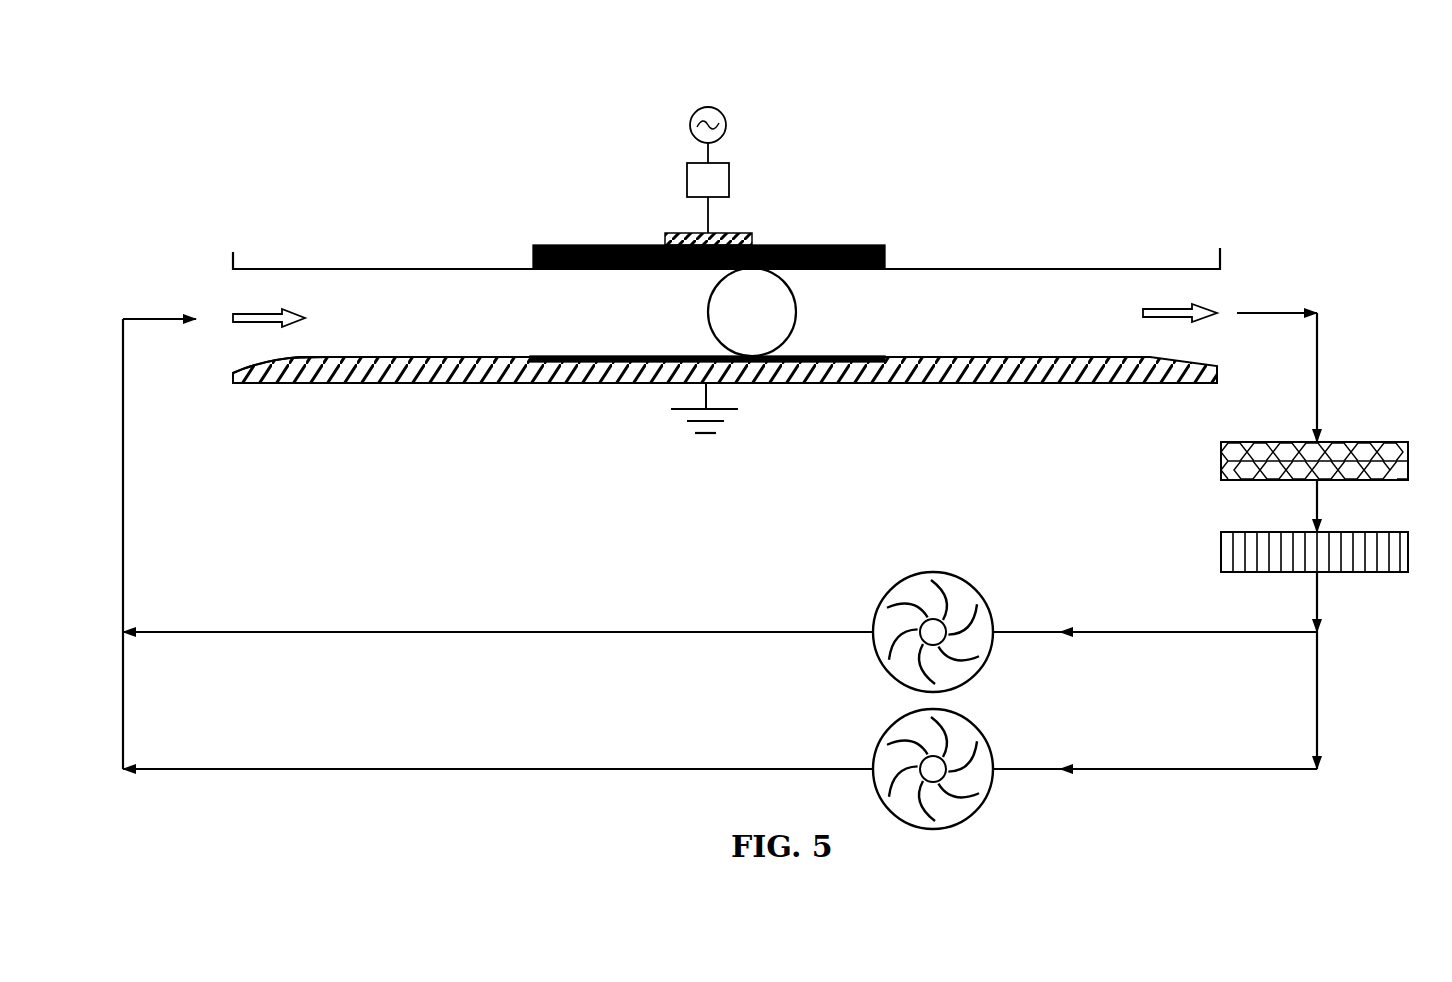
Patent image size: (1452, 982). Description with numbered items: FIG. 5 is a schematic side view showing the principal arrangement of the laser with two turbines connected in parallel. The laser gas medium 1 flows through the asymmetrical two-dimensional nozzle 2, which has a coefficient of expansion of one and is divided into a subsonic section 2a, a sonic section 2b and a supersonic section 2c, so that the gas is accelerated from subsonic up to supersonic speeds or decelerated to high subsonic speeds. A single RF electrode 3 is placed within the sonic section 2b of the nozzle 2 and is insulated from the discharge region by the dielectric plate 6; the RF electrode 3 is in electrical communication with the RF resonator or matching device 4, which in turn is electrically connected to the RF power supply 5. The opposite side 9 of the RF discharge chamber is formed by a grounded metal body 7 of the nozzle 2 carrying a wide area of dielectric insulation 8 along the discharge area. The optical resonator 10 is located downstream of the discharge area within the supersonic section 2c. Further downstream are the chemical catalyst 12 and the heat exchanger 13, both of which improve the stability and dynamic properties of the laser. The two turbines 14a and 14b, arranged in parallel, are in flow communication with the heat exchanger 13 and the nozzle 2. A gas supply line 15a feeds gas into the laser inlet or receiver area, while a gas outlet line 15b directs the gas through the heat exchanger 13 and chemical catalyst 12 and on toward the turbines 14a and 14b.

The laser gas medium 1 is at (233, 318).
The nozzle 2 is at (340, 273).
The subsonic section 2a is at (258, 366).
The sonic section 2b is at (296, 359).
The supersonic section 2c is at (406, 357).
The RF electrode 3 is at (675, 240).
The RF resonator or matching device 4 is at (693, 180).
The RF power supply 5 is at (702, 110).
The dielectric plate 6 is at (806, 245).
The grounded metal body 7 is at (810, 372).
The dielectric insulation 8 is at (863, 355).
The opposite side of RF discharge chamber 9 is at (708, 437).
The optical resonator 10 is at (745, 318).
The chemical catalyst 12 is at (1221, 458).
The heat exchanger 13 is at (1221, 552).
The turbine 14a is at (985, 645).
The turbine 14b is at (975, 755).
The gas supply line 15a is at (123, 453).
The gas outlet line 15b is at (1317, 365).